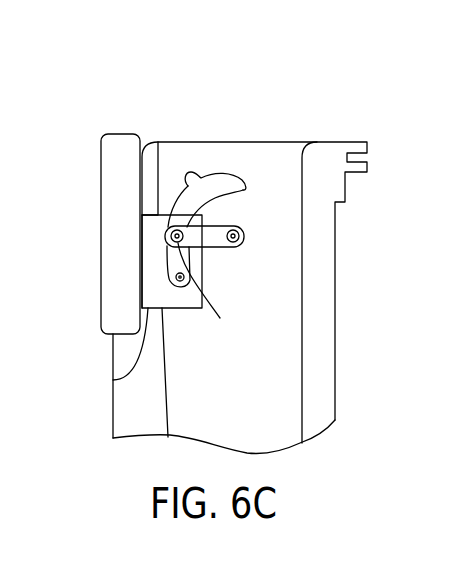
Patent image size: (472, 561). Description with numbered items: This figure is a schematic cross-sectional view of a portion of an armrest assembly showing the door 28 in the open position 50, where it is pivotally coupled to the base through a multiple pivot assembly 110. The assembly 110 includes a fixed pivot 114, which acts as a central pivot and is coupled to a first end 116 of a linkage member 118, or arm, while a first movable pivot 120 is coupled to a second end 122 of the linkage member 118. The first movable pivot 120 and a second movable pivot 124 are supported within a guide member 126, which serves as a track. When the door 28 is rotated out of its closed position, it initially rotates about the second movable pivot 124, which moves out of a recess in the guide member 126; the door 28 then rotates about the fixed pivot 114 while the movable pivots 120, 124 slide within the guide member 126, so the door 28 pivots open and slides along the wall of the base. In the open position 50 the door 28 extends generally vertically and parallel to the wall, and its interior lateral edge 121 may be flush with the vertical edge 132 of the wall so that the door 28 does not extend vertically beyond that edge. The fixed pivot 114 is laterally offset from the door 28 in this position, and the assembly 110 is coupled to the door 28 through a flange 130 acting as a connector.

The open position 50 is at (84, 128).
The door 28 is at (101, 231).
The multiple pivot assembly 110 is at (254, 311).
The fixed pivot 114 is at (239, 241).
The first end 116 is at (237, 248).
The linkage member 118 is at (205, 247).
The first movable pivot 120 is at (206, 296).
The interior lateral edge 121 is at (120, 134).
The second end 122 is at (200, 210).
The second movable pivot 124 is at (180, 282).
The guide member 126 is at (229, 175).
The flange 130 is at (113, 380).
The vertical edge 132 is at (144, 150).